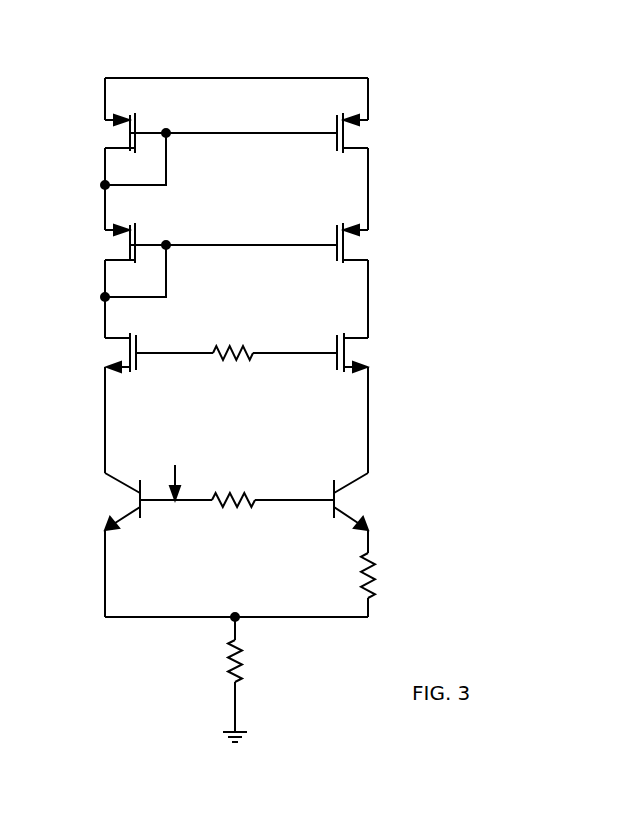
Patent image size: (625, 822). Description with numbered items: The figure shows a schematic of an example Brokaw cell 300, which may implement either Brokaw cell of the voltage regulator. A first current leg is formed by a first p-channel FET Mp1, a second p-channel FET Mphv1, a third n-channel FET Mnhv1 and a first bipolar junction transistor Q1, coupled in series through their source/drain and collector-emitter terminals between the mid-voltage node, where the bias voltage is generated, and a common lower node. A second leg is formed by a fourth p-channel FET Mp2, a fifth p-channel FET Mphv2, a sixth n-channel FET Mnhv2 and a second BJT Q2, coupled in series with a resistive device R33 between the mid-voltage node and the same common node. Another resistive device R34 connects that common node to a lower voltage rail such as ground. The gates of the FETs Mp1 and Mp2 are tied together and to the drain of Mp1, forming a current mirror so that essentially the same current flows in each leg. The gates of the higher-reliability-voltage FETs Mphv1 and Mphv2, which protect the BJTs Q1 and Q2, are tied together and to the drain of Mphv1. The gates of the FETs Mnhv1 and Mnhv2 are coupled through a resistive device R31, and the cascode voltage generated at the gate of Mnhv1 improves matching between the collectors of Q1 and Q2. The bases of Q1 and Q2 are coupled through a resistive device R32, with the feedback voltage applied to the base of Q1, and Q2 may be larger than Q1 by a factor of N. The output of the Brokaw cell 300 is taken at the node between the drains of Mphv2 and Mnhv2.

The Brokaw cell 300 is at (436, 80).
The first FET Mp1 is at (117, 151).
The fourth FET Mp2 is at (281, 133).
The second FET Mphv1 is at (101, 262).
The fifth FET Mphv2 is at (300, 243).
The third FET Mnhv1 is at (126, 352).
The sixth FET Mnhv2 is at (344, 352).
The resistive device R31 is at (233, 341).
The resistive device R32 is at (233, 488).
The resistive device R33 is at (390, 575).
The resistive device R34 is at (216, 679).
The first bipolar junction transistor Q1 is at (152, 501).
The second bipolar junction transistor Q2 is at (348, 501).